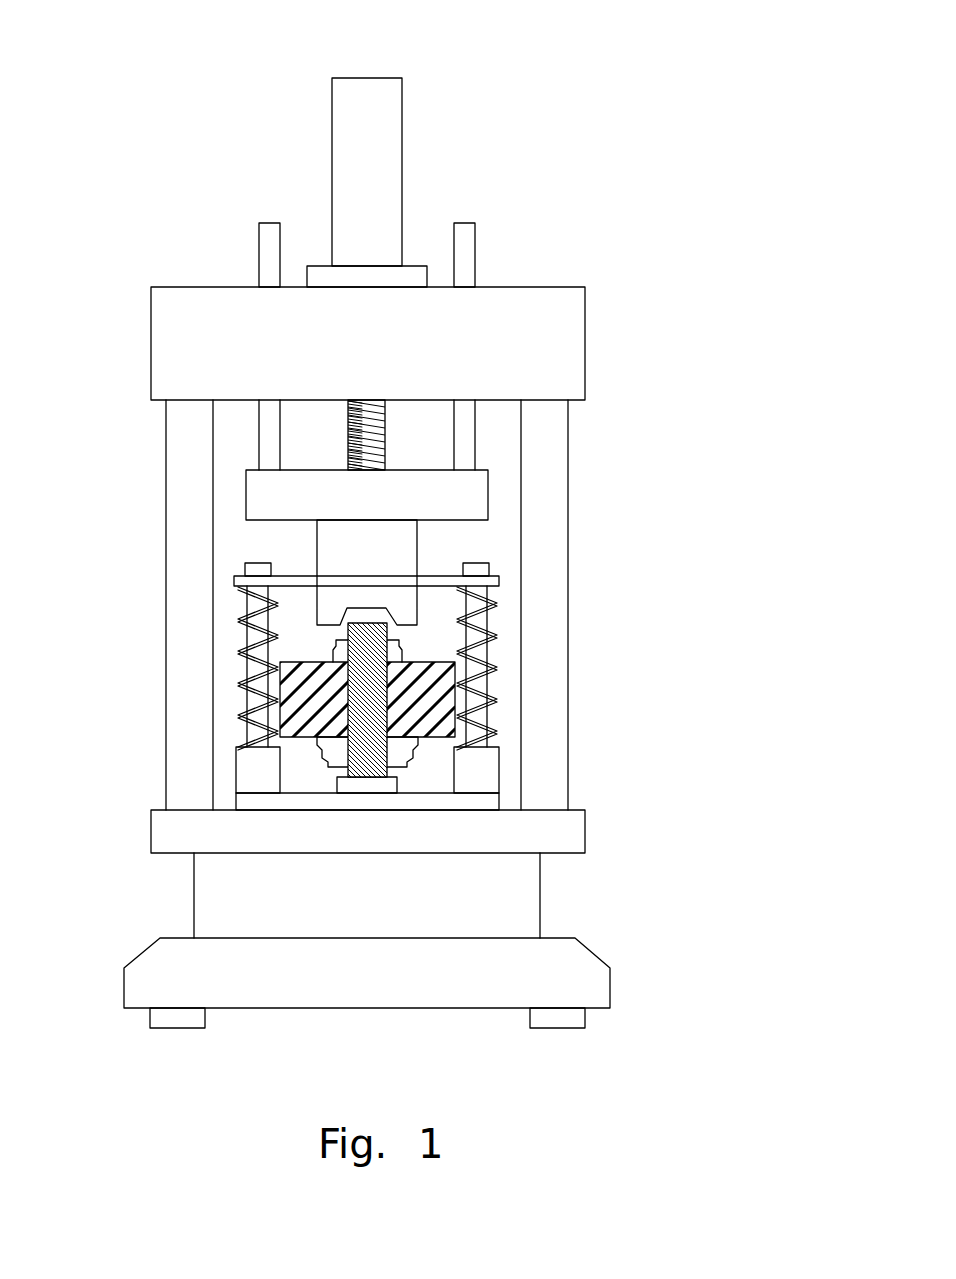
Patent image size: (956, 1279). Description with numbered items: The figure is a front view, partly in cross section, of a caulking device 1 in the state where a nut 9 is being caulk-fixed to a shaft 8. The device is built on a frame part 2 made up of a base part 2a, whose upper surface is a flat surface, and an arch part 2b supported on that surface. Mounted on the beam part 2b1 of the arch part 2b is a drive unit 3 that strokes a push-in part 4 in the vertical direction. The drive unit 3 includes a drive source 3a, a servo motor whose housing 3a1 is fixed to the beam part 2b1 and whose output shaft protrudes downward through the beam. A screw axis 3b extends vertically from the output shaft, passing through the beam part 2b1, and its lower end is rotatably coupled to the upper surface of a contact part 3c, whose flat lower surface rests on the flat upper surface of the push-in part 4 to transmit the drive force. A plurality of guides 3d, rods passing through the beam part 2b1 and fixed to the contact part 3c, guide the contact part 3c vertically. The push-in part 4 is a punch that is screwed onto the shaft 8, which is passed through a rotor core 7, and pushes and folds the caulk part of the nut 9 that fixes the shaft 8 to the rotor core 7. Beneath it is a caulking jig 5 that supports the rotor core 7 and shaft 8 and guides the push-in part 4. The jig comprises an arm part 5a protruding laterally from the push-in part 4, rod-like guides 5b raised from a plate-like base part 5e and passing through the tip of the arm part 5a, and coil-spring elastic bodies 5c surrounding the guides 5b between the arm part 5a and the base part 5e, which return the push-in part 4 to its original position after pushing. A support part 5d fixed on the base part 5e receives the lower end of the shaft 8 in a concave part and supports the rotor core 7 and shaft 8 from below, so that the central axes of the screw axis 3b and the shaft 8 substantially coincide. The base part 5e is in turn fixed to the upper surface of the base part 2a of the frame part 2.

The caulking device 1 is at (588, 32).
The frame part 2 is at (143, 762).
The base part 2a is at (198, 900).
The arch part 2b is at (587, 578).
The beam part 2b1 is at (163, 340).
The drive unit 3 is at (238, 513).
The drive source 3a is at (428, 195).
The housing 3a1 is at (392, 119).
The screw axis 3b is at (383, 440).
The contact part 3c is at (480, 500).
The guide 3d is at (263, 437).
The push-in part 4 is at (405, 612).
The caulking jig 5 is at (495, 767).
The arm part 5a is at (235, 580).
The guide 5b is at (238, 615).
The elastic body 5c is at (238, 713).
The support part 5d is at (388, 782).
The base part 5e is at (427, 802).
The rotor core 7 is at (278, 698).
The shaft 8 is at (400, 708).
The nut 9 is at (400, 647).